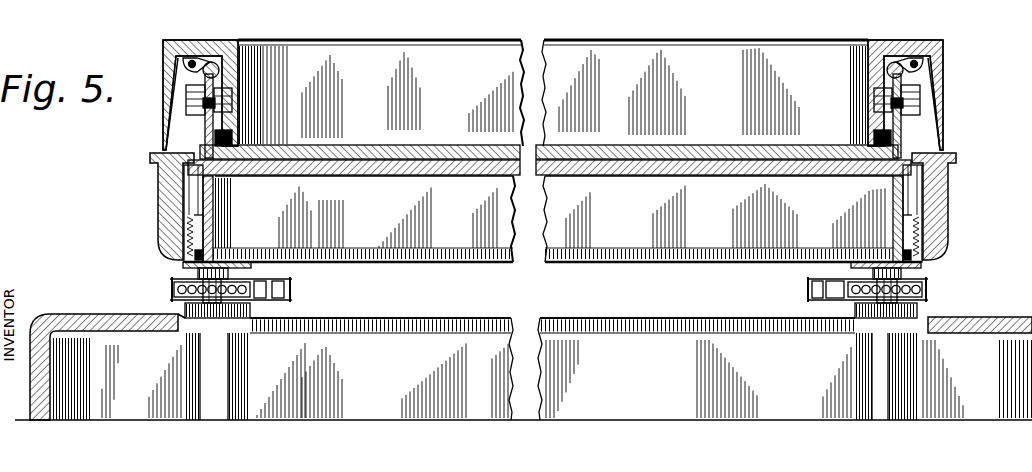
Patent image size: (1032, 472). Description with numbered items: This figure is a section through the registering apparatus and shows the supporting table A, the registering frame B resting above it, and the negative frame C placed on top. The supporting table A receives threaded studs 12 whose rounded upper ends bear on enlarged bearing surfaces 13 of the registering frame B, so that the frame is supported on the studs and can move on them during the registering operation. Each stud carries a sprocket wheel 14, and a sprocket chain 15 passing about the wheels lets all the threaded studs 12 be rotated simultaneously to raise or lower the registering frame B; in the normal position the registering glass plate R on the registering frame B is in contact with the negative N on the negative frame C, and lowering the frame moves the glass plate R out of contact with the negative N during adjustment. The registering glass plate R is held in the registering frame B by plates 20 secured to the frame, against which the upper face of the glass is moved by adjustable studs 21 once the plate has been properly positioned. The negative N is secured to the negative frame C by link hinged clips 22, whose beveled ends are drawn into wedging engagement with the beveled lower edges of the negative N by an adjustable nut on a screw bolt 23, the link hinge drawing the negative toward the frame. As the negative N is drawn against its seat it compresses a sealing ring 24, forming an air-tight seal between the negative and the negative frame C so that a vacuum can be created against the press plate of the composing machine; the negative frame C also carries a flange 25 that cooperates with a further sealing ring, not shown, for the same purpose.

The threaded stud 12 is at (216, 270).
The enlarged bearing surface 13 is at (183, 268).
The sprocket wheel 14 is at (172, 291).
The sprocket chain 15 is at (284, 292).
The plate 20 is at (170, 153).
The adjustable stud 21 is at (200, 200).
The link hinged clip 22 is at (215, 124).
The screw bolt 23 is at (232, 106).
The sealing ring 24 is at (234, 138).
The flange 25 is at (167, 94).
The supporting table A is at (58, 320).
The registering frame B is at (381, 259).
The negative frame C is at (660, 42).
The negative N is at (381, 146).
The registering glass plate R is at (395, 177).